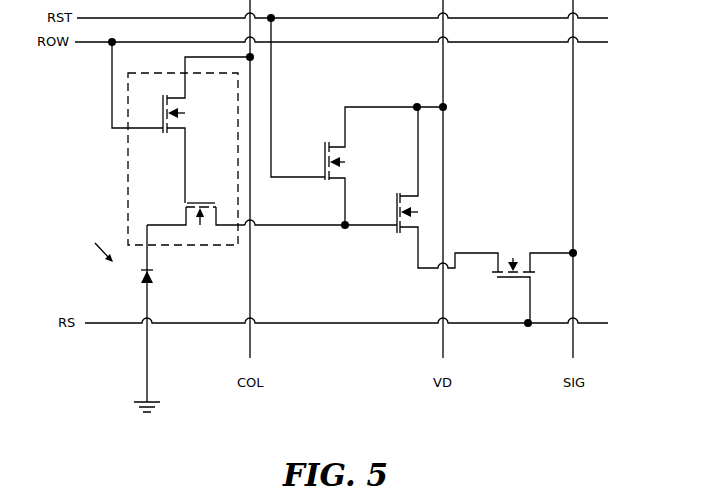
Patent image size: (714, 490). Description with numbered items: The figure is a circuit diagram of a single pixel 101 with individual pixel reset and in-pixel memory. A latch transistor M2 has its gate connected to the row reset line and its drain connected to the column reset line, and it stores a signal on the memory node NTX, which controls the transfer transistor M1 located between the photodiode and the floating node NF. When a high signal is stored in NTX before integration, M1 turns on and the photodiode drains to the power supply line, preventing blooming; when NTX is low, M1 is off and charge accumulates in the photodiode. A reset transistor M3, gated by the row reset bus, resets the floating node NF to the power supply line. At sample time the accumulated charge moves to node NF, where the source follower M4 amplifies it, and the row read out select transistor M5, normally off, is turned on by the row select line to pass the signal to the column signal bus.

The pixel 101 is at (132, 242).
The transfer transistor M1 is at (321, 212).
The latch transistor M2 is at (181, 122).
The reset transistor M3 is at (357, 121).
The source follower M4 is at (441, 189).
The row read out select transistor M5 is at (511, 288).
The memory node NTX is at (196, 200).
The floating node NF is at (335, 247).